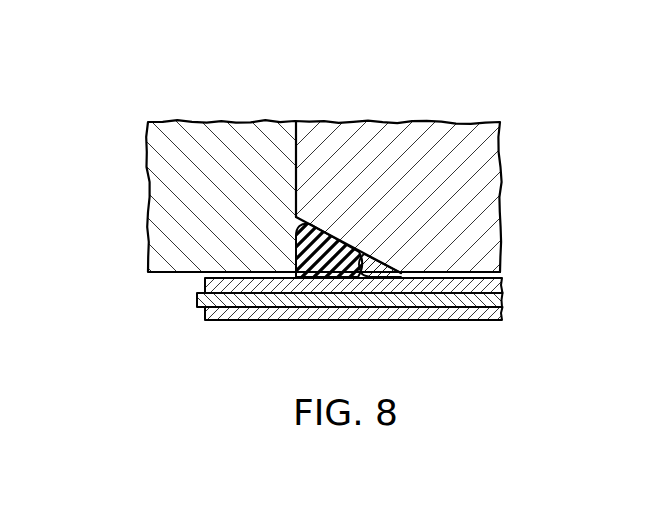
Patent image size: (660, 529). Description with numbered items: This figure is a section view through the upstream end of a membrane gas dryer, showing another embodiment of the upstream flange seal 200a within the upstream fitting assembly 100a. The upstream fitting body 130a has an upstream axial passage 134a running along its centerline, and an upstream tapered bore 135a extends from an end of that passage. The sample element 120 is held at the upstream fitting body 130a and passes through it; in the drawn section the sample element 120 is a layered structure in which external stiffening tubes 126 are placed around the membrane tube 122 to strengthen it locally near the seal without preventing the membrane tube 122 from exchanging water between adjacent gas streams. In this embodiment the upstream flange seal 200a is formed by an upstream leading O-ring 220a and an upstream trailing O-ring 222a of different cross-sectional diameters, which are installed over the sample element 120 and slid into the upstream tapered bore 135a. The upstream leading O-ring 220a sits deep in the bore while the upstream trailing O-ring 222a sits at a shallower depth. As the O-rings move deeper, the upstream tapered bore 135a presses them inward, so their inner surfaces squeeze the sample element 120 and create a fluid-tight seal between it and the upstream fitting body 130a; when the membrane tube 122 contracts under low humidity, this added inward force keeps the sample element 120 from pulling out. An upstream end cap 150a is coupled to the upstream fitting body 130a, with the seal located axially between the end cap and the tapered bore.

The upstream fitting assembly 100a is at (344, 155).
The upstream end cap 150a is at (214, 192).
The upstream fitting body 130a is at (395, 196).
The upstream axial passage 134a is at (486, 270).
The upstream flange seal 200a is at (334, 258).
The upstream tapered bore 135a is at (364, 256).
The upstream trailing O-ring 222a is at (320, 263).
The upstream leading O-ring 220a is at (381, 263).
The sample element 120 is at (381, 318).
The external stiffening tubes 126 is at (205, 285).
The membrane tube 122 is at (197, 300).